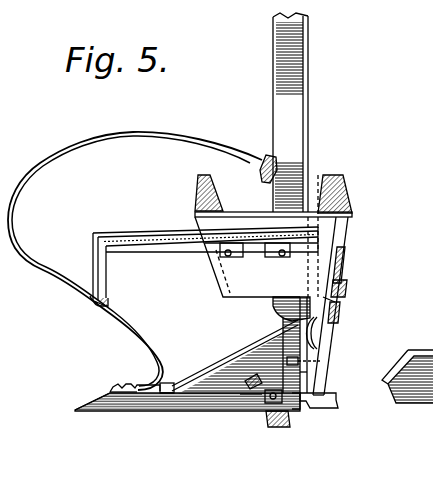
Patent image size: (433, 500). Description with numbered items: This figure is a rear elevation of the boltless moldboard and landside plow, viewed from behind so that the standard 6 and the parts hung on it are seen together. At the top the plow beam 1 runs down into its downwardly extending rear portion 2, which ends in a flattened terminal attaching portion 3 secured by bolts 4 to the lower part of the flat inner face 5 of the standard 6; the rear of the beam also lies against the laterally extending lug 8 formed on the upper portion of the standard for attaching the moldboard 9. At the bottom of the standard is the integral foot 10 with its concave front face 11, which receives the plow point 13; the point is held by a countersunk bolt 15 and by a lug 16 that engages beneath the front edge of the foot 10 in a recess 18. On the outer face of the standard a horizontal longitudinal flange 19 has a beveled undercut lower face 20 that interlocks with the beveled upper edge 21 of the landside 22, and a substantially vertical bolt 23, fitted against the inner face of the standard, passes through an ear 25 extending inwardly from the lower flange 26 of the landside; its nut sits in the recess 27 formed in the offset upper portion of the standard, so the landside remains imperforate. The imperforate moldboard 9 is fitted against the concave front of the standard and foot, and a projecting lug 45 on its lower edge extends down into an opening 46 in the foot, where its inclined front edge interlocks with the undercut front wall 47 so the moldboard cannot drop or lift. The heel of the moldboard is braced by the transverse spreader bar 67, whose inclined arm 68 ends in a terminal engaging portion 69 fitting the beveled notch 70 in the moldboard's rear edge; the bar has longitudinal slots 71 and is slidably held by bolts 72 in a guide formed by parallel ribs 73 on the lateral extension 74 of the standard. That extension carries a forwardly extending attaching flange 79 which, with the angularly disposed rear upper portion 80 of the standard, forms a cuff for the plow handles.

The plow beam 1 is at (309, 85).
The downwardly extending rear portion 2 is at (288, 194).
The flattened terminal attaching portion 3 is at (300, 337).
The bolts 4 is at (297, 362).
The flat inner face 5 is at (302, 374).
The standard 6 is at (327, 340).
The laterally extending lug 8 is at (268, 166).
The moldboard 9 is at (133, 423).
The foot 10 is at (215, 387).
The concave front face 11 is at (210, 374).
The plow point 13 is at (74, 408).
The bolt 15 is at (263, 410).
The lug 16 is at (168, 405).
The recess 18 is at (173, 400).
The horizontal longitudinal flange 19 is at (347, 295).
The beveled undercut lower face 20 is at (348, 302).
The beveled upper edge 21 is at (341, 306).
The landside 22 is at (322, 350).
The vertical bolt 23 is at (302, 409).
The ear 25 is at (280, 428).
The lower flange 26 is at (333, 407).
The recess 27 is at (345, 268).
The projecting lug 45 is at (250, 378).
The opening 46 is at (256, 384).
The undercut front wall 47 is at (247, 392).
The spreader bar 67 is at (133, 233).
The arm 68 is at (107, 275).
The terminal engaging portion 69 is at (90, 296).
The notch 70 is at (87, 304).
The longitudinal slots 71 is at (226, 258).
The bolts 72 is at (281, 258).
The parallel ribs 73 is at (207, 233).
The lateral extension 74 is at (200, 222).
The attaching flange 79 is at (201, 177).
The rear upper portion 80 is at (347, 183).